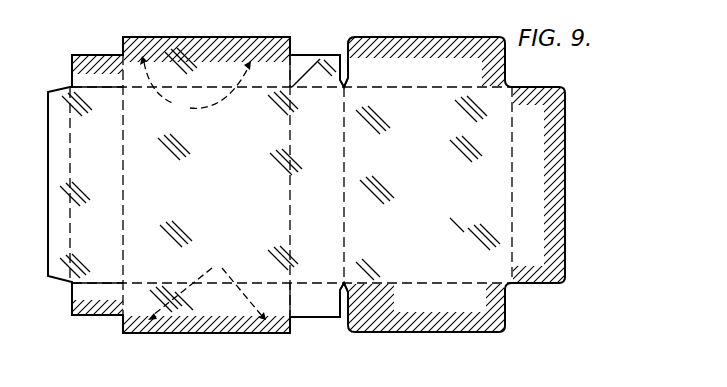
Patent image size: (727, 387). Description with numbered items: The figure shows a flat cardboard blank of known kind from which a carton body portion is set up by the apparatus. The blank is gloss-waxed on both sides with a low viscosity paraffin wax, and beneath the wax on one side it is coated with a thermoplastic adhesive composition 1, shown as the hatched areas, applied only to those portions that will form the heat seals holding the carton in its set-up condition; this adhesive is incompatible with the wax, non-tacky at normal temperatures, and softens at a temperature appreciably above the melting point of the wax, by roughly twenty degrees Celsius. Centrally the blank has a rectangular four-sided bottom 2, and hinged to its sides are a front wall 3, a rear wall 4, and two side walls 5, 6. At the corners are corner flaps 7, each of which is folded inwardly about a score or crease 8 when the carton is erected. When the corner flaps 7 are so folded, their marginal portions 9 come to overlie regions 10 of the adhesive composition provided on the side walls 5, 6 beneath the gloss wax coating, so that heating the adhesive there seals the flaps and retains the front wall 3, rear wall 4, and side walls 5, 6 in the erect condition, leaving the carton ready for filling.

The thermoplastic adhesive composition 1 is at (215, 334).
The bottom 2 is at (203, 200).
The front wall 3 is at (105, 190).
The rear wall 4 is at (322, 224).
The side wall 5 is at (220, 87).
The side wall 6 is at (213, 309).
The corner flap 7 is at (86, 306).
The score or crease 8 is at (106, 307).
The marginal portion 9 is at (336, 318).
The region of adhesive composition 10 is at (203, 188).